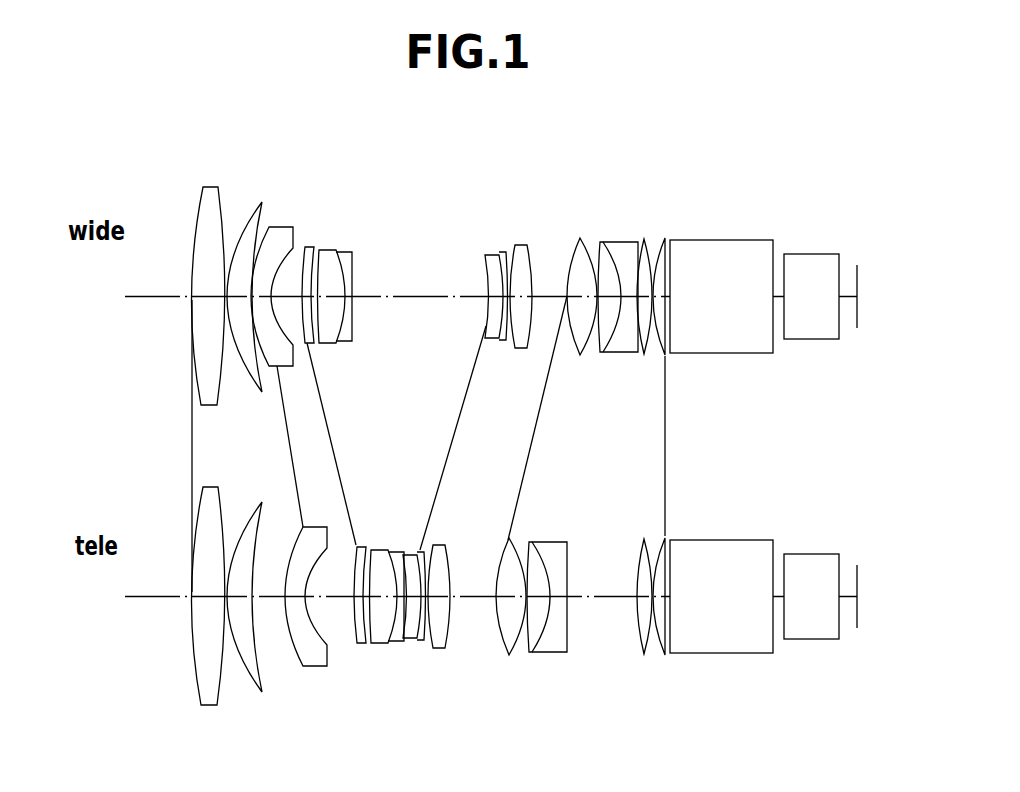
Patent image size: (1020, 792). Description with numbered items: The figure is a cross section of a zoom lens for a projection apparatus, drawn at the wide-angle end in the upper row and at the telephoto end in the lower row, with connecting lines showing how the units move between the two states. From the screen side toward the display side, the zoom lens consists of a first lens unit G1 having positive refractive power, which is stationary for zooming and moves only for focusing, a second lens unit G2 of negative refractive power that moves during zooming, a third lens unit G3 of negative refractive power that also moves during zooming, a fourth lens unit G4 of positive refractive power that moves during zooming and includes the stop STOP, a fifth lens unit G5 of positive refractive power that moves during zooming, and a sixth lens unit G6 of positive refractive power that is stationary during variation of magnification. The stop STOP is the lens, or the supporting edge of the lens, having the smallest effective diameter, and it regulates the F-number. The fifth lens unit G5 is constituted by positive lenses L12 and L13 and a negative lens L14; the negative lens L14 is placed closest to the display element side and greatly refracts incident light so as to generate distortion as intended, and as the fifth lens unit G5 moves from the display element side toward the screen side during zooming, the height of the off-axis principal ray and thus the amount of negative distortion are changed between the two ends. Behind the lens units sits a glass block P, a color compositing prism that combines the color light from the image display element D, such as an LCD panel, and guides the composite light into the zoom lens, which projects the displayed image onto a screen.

The first lens unit G1 is at (184, 697).
The second lens unit G2 is at (285, 665).
The third lens unit G3 is at (355, 665).
The fourth lens unit G4 is at (455, 665).
The fifth lens unit G5 is at (591, 424).
The sixth lens unit G6 is at (636, 665).
The positive lens L12 is at (581, 252).
The positive lens L13 is at (607, 254).
The negative lens L14 is at (620, 253).
The stop STOP is at (492, 340).
The glass block P is at (847, 665).
The image display element D is at (875, 665).